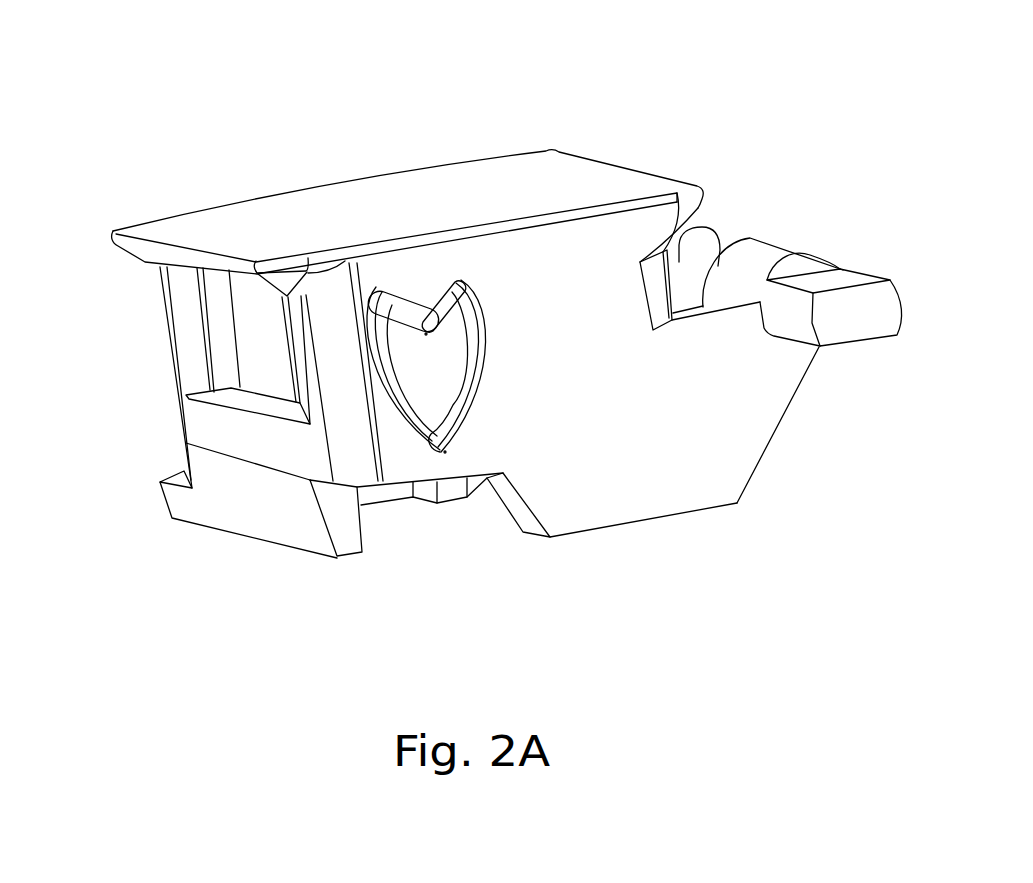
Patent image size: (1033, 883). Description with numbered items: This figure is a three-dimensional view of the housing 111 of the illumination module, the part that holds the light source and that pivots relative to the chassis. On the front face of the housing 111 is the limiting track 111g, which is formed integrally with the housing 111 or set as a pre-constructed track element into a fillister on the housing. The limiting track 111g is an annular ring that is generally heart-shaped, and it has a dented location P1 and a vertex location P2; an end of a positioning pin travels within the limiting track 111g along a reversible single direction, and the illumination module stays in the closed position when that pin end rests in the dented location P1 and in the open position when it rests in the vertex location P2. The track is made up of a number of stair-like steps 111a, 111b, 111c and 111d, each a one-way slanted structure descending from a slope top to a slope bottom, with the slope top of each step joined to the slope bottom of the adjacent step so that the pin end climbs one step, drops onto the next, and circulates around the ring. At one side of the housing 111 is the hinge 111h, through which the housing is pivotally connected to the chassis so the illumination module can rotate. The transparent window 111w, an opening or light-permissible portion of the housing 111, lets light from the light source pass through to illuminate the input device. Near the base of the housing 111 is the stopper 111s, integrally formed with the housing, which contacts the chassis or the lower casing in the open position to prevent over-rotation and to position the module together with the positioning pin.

The housing 111 is at (212, 140).
The step 111a is at (404, 306).
The step 111b is at (404, 416).
The step 111c is at (471, 372).
The step 111d is at (438, 307).
The limiting track 111g is at (495, 322).
The hinge 111h is at (846, 278).
The transparent window 111w is at (223, 349).
The stopper 111s is at (178, 478).
The dented location P1 is at (426, 334).
The vertex location P2 is at (445, 453).